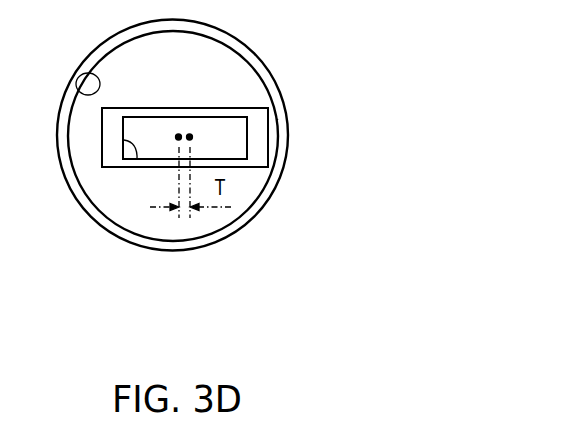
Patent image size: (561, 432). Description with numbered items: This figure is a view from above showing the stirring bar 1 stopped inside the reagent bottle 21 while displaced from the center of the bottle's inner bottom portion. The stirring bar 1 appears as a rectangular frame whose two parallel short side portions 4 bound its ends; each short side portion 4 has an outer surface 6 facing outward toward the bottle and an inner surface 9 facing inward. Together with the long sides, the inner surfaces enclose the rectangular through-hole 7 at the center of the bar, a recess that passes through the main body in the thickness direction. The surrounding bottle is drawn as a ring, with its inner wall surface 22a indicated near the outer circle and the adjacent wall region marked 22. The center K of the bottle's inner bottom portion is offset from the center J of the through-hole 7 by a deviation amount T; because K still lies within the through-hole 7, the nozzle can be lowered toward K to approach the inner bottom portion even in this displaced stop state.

The stirring bar 1 is at (203, 108).
The short side portion 4 is at (102, 132).
The outer surface of the short side portion 6 is at (278, 119).
The through-hole 7 is at (233, 132).
The inner surface of the short side portion 9 is at (137, 165).
The reagent bottle 21 is at (280, 184).
The inner tube surface 22 is at (67, 187).
The inner wall surface 22a is at (76, 74).